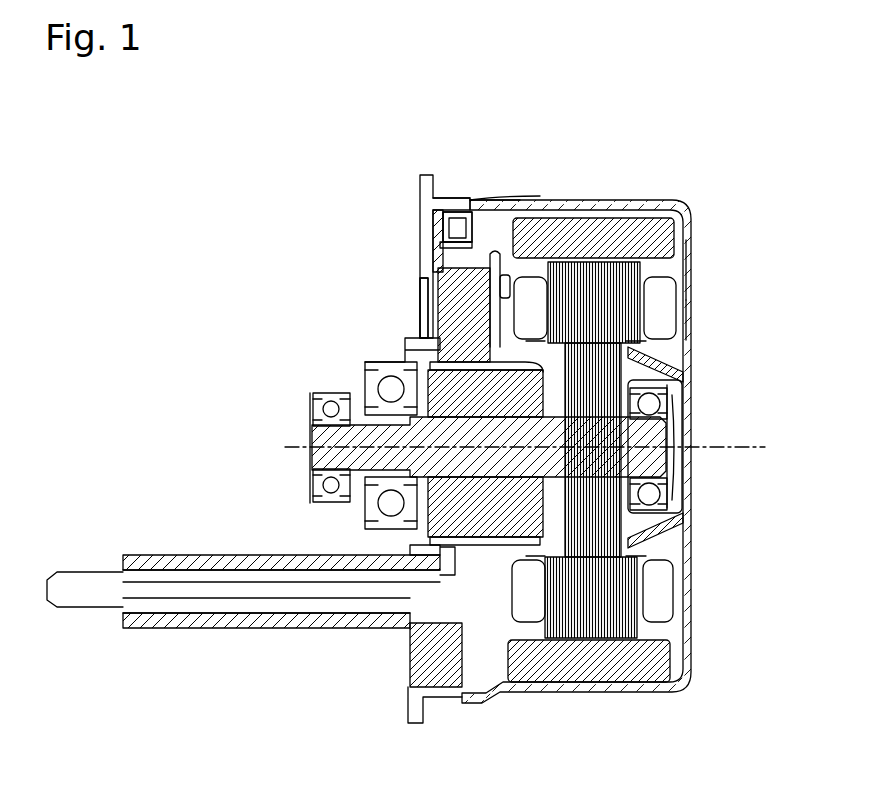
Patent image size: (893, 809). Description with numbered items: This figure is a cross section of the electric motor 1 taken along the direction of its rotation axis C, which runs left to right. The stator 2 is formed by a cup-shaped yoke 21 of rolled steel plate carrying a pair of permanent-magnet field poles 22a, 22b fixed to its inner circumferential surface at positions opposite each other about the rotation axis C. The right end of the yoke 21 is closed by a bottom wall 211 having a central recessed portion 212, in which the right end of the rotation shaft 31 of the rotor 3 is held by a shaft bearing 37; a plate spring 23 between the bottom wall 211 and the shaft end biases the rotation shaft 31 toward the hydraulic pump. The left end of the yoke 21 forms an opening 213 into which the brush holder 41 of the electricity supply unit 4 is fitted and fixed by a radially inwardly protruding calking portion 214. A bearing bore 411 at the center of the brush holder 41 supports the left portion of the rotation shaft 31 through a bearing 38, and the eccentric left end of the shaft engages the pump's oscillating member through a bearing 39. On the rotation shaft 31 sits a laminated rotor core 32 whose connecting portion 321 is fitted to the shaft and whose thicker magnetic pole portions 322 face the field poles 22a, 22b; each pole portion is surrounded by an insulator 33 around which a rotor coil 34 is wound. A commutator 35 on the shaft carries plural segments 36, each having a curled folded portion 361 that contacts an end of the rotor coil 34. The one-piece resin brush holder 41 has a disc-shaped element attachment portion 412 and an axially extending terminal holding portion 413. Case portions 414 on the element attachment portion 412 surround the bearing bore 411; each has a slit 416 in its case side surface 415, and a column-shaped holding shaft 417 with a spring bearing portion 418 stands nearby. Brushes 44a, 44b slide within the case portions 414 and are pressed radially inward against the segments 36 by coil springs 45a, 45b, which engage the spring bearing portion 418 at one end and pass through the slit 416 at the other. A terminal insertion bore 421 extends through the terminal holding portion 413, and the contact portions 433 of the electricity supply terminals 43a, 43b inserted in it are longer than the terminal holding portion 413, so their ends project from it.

The electric motor 1 is at (745, 179).
The stator 2 is at (577, 200).
The yoke 21 is at (691, 262).
The bottom wall 211 is at (691, 312).
The recessed portion 212 is at (682, 478).
The opening 213 is at (420, 212).
The calking portion 214 is at (470, 198).
The field pole 22a is at (630, 235).
The field pole 22b is at (590, 672).
The plate spring 23 is at (682, 420).
The rotor 3 is at (652, 496).
The rotation shaft 31 is at (312, 427).
The rotor core 32 is at (630, 582).
The connecting portion 321 is at (612, 542).
The magnetic pole portion 322 is at (625, 290).
The insulator 33 is at (676, 375).
The rotor coil 34 is at (666, 330).
The commutator 35 is at (368, 372).
The segment 36 is at (427, 343).
The folded portion 361 is at (366, 514).
The shaft bearing 37 is at (672, 390).
The bearing 38 is at (313, 481).
The bearing 39 is at (313, 502).
The electricity supply unit 4 is at (500, 265).
The brush holder 41 is at (410, 660).
The bearing bore 411 is at (368, 358).
The element attachment portion 412 is at (410, 692).
The terminal holding portion 413 is at (207, 620).
The case portion 414 is at (490, 285).
The case side surface 415 is at (492, 262).
The slit 416 is at (425, 240).
The holding shaft 417 is at (435, 278).
The spring bearing portion 418 is at (428, 180).
The terminal insertion bore 421 is at (330, 600).
The electricity supply terminal 43a is at (257, 595).
The electricity supply terminal 43b is at (266, 620).
The brush 44a is at (420, 318).
The brush 44b is at (424, 308).
The coil spring 45a is at (445, 263).
The coil spring 45b is at (457, 227).
The contact portion 433 is at (87, 608).
The rotation axis C is at (718, 447).